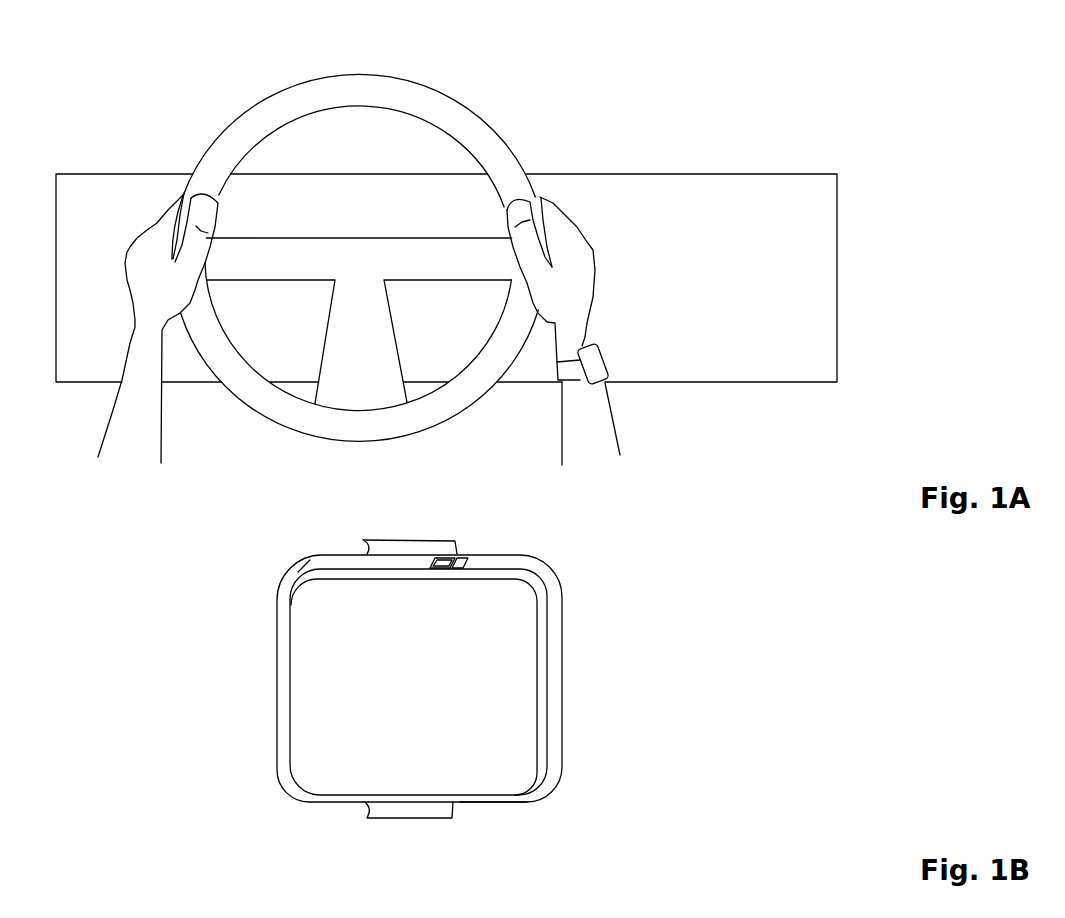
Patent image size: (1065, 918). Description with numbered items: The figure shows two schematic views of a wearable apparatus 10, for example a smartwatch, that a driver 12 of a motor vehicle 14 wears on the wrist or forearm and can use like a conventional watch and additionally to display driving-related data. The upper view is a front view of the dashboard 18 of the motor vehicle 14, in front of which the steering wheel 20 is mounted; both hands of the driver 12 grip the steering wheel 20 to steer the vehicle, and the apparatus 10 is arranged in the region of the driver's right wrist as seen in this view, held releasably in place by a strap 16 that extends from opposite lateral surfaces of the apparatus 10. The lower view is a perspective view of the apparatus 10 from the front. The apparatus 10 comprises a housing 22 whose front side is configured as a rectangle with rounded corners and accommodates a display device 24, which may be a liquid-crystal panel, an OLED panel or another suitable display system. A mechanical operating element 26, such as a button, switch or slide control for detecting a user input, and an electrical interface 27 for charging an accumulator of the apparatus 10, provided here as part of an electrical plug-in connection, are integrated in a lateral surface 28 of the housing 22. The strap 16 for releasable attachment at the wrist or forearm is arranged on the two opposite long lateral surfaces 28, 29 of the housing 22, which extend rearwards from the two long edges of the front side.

In FIG. 1A, the apparatus 10 is at (626, 377).
In FIG. 1B, the apparatus 10 is at (582, 604).
In FIG. 1A, the driver 12 is at (582, 332).
In FIG. 1A, the motor vehicle 14 is at (150, 145).
In FIG. 1A, the strap 16 is at (560, 383).
In FIG. 1B, the strap 16 is at (412, 547).
In FIG. 1A, the dashboard 18 is at (640, 195).
In FIG. 1A, the steering wheel 20 is at (485, 145).
In FIG. 1B, the housing 22 is at (567, 691).
In FIG. 1B, the display device 24 is at (520, 670).
In FIG. 1B, the mechanical operating element 26 is at (450, 558).
In FIG. 1B, the electrical interface 27 is at (462, 558).
In FIG. 1B, the lateral surface 28 is at (357, 556).
In FIG. 1B, the lateral surface 29 is at (498, 805).